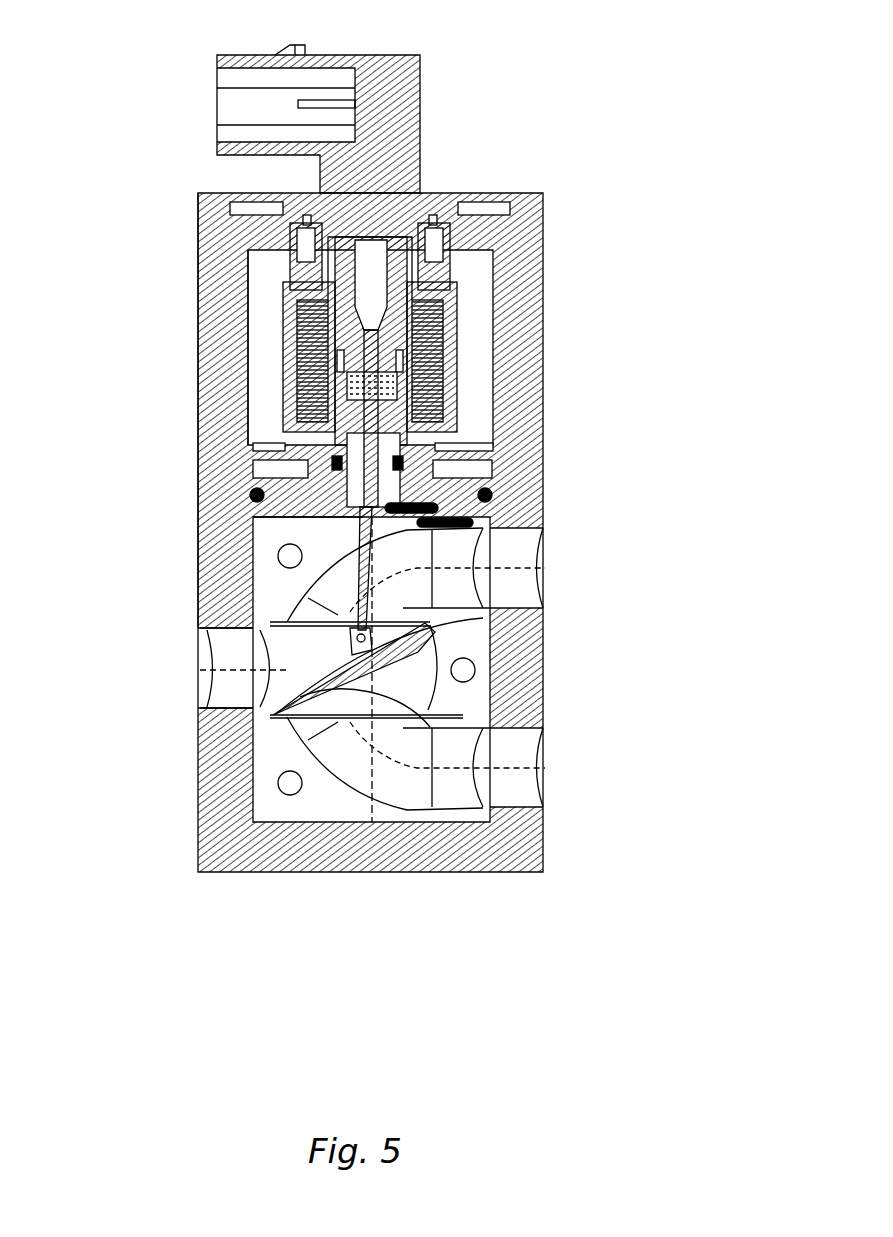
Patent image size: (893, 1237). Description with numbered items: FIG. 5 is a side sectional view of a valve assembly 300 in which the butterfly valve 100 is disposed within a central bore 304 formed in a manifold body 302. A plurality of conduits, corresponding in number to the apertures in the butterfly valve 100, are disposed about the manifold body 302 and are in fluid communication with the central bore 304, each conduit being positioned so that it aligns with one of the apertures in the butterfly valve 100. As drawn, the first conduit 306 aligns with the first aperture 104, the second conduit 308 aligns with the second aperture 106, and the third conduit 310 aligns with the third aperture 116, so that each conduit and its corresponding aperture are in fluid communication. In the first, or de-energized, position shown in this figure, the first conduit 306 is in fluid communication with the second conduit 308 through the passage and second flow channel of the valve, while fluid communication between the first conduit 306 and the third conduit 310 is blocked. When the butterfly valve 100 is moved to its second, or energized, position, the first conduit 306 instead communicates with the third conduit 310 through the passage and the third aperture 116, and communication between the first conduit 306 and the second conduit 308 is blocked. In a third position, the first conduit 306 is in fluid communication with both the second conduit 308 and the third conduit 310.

The butterfly valve 100 is at (270, 820).
The valve assembly 300 is at (622, 92).
The manifold body 302 is at (198, 365).
The central bore 304 is at (240, 525).
The first aperture 104 is at (215, 640).
The first conduit 306 is at (210, 702).
The second aperture 106 is at (480, 545).
The second conduit 308 is at (538, 535).
The third aperture 116 is at (485, 735).
The third conduit 310 is at (540, 795).